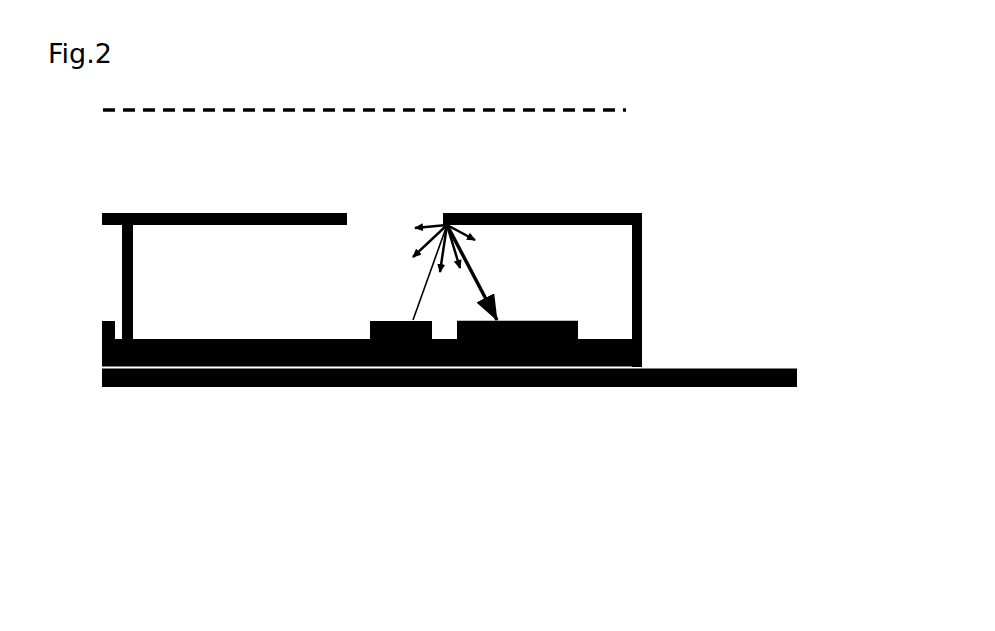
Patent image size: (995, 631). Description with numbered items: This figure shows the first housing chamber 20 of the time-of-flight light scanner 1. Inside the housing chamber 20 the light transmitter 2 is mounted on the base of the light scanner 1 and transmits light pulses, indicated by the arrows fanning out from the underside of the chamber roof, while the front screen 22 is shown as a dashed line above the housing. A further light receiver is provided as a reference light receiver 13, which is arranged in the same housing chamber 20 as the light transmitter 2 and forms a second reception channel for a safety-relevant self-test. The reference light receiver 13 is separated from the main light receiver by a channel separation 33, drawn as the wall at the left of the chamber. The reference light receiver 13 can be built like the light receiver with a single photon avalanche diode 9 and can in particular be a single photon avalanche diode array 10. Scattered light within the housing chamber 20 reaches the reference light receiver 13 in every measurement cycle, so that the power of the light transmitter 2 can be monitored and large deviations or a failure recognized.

The light scanner 1 is at (505, 422).
The light transmitter 2 is at (383, 320).
The single photon avalanche diode 9 is at (512, 317).
The single photon avalanche diode array 10 is at (525, 317).
The reference light receiver 13 is at (527, 318).
The housing chamber 20 is at (593, 192).
The front screen 22 is at (543, 110).
The channel separation 33 is at (133, 293).